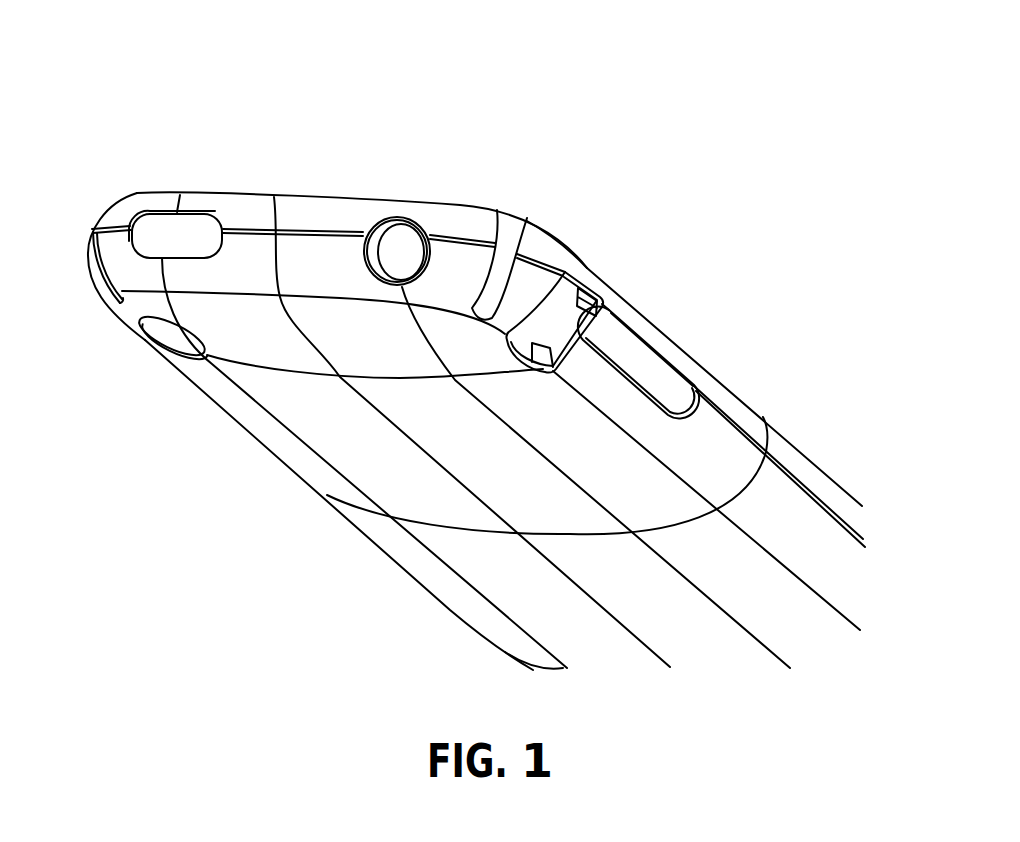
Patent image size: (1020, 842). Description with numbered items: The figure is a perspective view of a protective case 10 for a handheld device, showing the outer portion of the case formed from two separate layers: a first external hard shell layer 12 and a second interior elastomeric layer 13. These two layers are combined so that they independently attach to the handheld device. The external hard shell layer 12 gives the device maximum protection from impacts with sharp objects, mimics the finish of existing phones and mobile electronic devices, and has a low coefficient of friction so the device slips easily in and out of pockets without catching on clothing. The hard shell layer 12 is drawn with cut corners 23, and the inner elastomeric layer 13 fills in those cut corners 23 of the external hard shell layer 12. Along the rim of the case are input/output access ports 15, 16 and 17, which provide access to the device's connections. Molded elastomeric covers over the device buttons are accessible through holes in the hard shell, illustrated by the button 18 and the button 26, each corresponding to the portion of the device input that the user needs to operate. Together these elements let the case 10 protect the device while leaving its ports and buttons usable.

The protective case 10 is at (153, 54).
The first external hard shell layer 12 is at (747, 423).
The second interior elastomeric layer 13 is at (507, 232).
The input/output access port 15 is at (175, 237).
The input/output access port 16 is at (402, 250).
The input/output access port 17 is at (565, 311).
The button 18 is at (636, 358).
The cut corners 23 is at (532, 218).
The button 26 is at (170, 343).